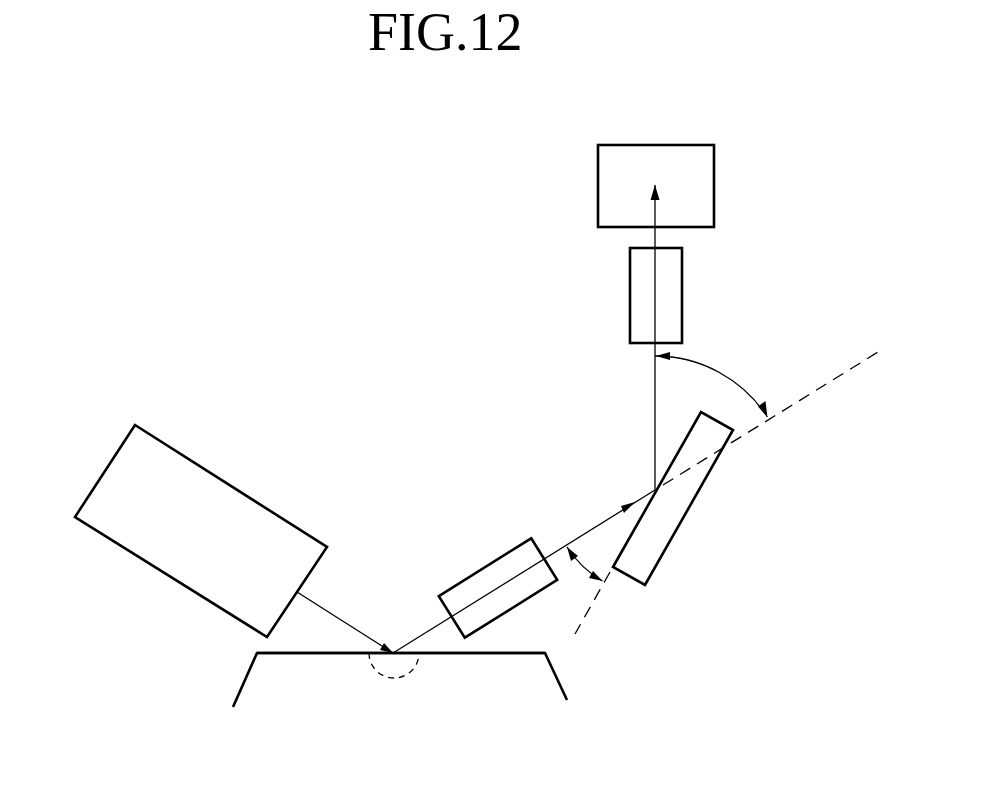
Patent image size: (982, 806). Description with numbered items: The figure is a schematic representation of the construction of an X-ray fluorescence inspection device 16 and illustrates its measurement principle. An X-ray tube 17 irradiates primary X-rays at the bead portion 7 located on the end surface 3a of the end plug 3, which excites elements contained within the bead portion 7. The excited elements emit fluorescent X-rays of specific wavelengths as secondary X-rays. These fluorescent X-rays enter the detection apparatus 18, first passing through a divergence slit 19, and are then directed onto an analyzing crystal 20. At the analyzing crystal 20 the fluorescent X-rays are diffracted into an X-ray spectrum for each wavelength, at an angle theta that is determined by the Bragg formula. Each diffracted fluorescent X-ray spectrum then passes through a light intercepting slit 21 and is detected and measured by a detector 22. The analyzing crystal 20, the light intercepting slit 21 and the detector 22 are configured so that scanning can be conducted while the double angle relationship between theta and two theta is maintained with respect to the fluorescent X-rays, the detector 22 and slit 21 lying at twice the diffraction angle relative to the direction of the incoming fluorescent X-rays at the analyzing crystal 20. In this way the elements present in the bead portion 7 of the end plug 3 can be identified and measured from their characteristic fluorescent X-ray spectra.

The end plug 3 is at (569, 697).
The end surface 3a is at (538, 652).
The bead portion 7 is at (402, 677).
The X-ray fluorescence inspection device 16 is at (285, 297).
The X-ray tube 17 is at (110, 463).
The detection apparatus 18 is at (582, 475).
The divergence slit 19 is at (482, 568).
The analyzing crystal 20 is at (687, 513).
The light intercepting slit 21 is at (630, 283).
The detector 22 is at (598, 188).